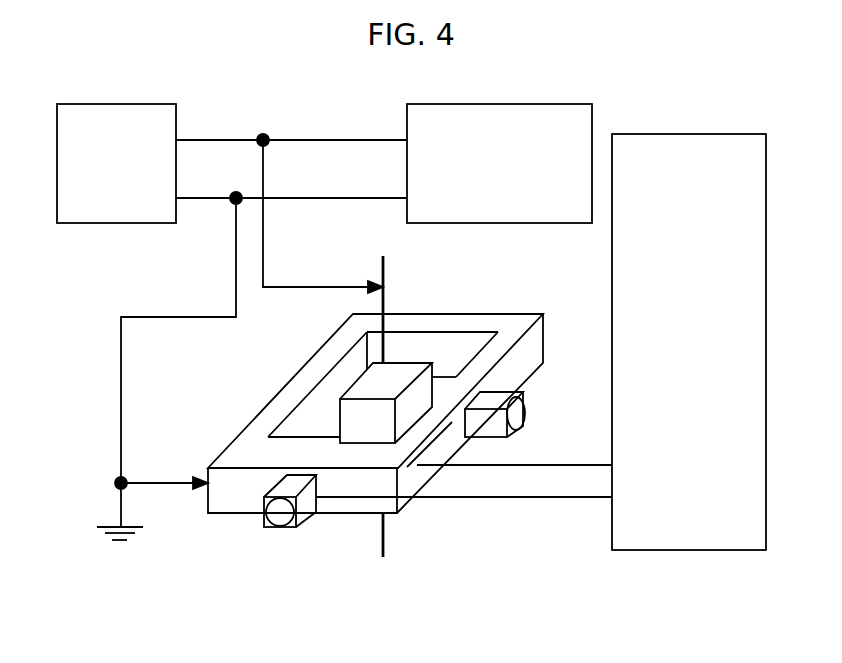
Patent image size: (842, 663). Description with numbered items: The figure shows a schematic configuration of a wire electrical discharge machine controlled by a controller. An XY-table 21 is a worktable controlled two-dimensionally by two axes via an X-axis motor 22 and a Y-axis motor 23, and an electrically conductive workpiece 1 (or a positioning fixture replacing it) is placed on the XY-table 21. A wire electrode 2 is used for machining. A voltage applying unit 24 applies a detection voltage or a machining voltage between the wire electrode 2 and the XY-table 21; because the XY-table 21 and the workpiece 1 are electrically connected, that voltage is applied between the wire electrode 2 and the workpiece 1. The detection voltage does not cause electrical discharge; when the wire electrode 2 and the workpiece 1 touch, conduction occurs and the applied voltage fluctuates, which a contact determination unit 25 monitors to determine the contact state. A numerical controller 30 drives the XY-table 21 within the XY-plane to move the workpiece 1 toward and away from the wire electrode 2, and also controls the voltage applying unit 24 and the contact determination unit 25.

The workpiece 1 is at (360, 398).
The wire electrode 2 is at (385, 299).
The XY-table 21 is at (237, 437).
The X-axis motor 22 is at (517, 417).
The Y-axis motor 23 is at (273, 518).
The voltage applying unit 24 is at (120, 224).
The contact determination unit 25 is at (525, 224).
The numerical controller 30 is at (612, 522).